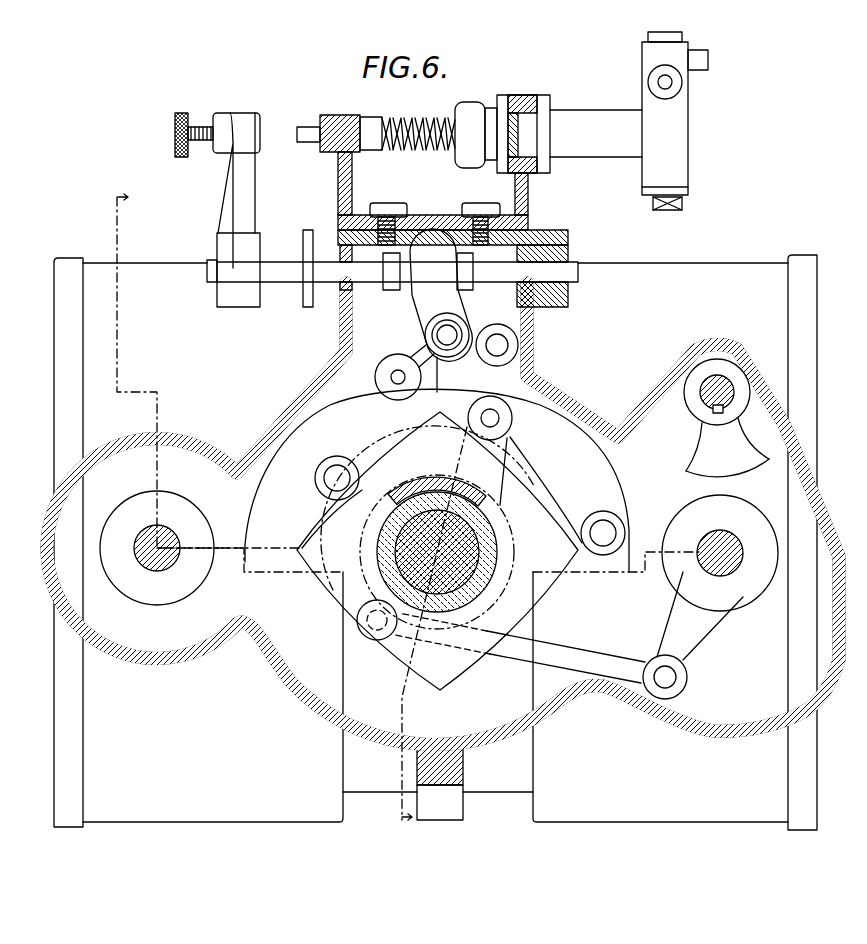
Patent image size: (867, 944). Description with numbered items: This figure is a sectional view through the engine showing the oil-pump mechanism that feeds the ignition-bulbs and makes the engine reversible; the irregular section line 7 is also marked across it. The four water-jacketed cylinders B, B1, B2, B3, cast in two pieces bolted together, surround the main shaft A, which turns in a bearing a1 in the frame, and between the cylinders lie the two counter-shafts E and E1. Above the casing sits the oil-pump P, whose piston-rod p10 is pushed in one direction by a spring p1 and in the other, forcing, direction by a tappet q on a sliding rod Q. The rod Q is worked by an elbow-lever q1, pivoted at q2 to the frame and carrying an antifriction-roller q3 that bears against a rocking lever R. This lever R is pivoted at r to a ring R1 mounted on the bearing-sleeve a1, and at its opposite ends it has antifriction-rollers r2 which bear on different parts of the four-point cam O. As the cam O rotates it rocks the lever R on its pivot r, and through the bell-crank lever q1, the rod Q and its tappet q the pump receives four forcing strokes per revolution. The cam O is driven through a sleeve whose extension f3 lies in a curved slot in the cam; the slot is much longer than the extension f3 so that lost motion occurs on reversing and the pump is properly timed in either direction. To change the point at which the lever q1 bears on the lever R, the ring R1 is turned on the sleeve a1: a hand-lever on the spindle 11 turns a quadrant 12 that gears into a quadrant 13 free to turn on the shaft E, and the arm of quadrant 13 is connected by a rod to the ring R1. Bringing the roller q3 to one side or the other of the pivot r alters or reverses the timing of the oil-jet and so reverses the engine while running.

The section line 7 7 is at (399, 513).
The spindle 11 is at (700, 392).
The quadrant 12 is at (727, 447).
The quadrant 13 is at (751, 555).
The main shaft A is at (437, 552).
The bearing a1 is at (500, 552).
The extension f3 is at (428, 508).
The four-point cam O is at (437, 551).
The rocking lever R is at (437, 480).
The ring R1 is at (508, 470).
The pivot r is at (490, 418).
The antifriction-rollers r2 is at (470, 505).
The counter-shaft E is at (708, 592).
The counter-shaft E1 is at (168, 566).
The oil-pump P is at (629, 121).
The spring p1 is at (398, 128).
The piston-rod p10 is at (310, 127).
The sliding rod Q is at (397, 268).
The tappet q is at (222, 210).
The elbow-lever q1 is at (441, 295).
The pivot q2 is at (430, 333).
The antifriction-roller q3 is at (385, 377).
The cylinder B is at (697, 542).
The cylinder B1 is at (130, 542).
The cylinder B2 is at (250, 697).
The cylinder B3 is at (625, 697).